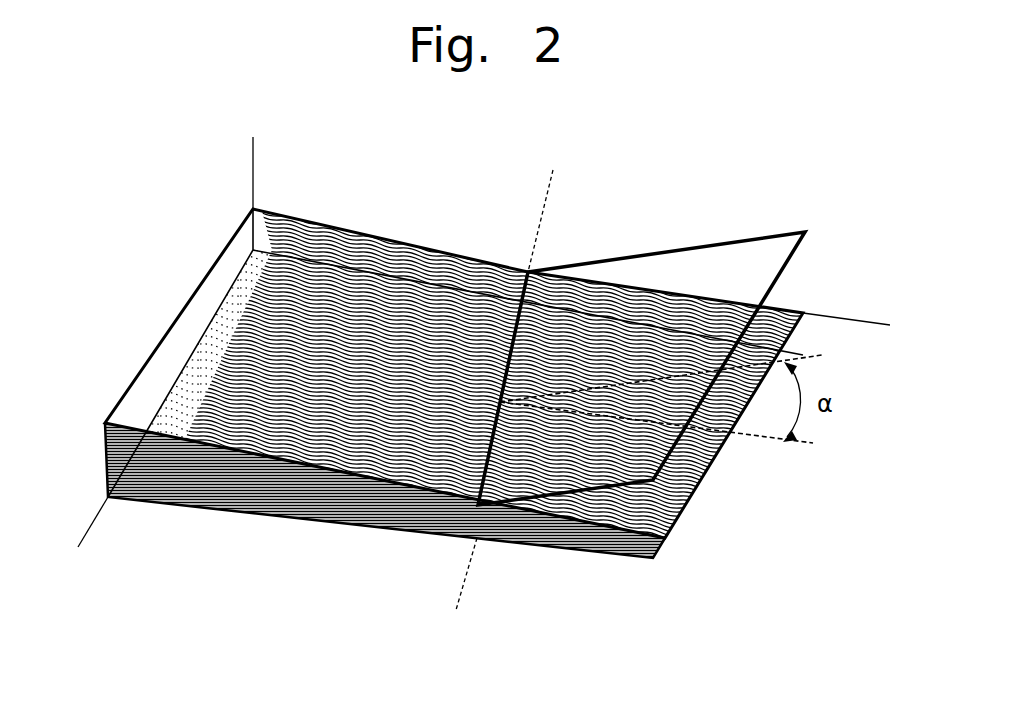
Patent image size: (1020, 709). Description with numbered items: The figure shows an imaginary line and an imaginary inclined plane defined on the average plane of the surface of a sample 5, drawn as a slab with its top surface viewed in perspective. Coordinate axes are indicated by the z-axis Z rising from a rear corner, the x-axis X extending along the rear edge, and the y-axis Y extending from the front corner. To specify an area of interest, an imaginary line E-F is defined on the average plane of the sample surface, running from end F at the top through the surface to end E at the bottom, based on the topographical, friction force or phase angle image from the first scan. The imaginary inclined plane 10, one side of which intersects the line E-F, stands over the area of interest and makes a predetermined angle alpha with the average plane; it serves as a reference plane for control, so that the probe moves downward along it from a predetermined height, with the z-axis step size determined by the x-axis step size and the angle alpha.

The sample 5 is at (277, 500).
The imaginary inclined plane 10 is at (713, 270).
The z-axis Z is at (252, 157).
The x-axis X is at (859, 326).
The y-axis Y is at (85, 542).
The imaginary line end F is at (545, 204).
The imaginary line end E is at (463, 594).